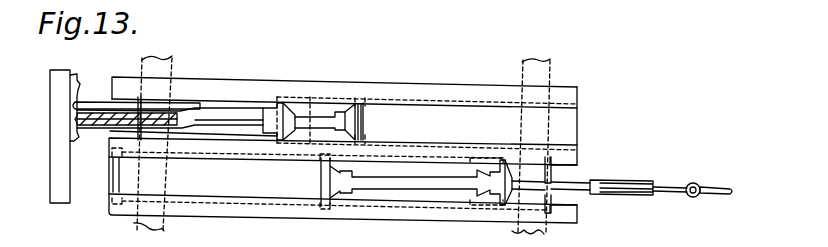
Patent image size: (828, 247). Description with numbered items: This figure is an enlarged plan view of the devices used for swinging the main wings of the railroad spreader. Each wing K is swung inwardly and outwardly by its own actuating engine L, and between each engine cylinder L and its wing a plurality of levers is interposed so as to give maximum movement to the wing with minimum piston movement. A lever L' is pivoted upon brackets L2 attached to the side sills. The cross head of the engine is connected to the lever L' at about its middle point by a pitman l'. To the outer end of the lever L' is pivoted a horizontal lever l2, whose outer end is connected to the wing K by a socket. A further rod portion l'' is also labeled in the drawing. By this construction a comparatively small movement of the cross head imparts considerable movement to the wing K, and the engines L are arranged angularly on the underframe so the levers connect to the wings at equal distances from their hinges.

The wing K is at (53, 114).
The engine L is at (343, 145).
The lever L' is at (382, 152).
The bracket L2 is at (593, 170).
The pitman l' is at (170, 105).
The horizontal lever l2 is at (92, 103).
The lower piston rod l'' is at (516, 214).